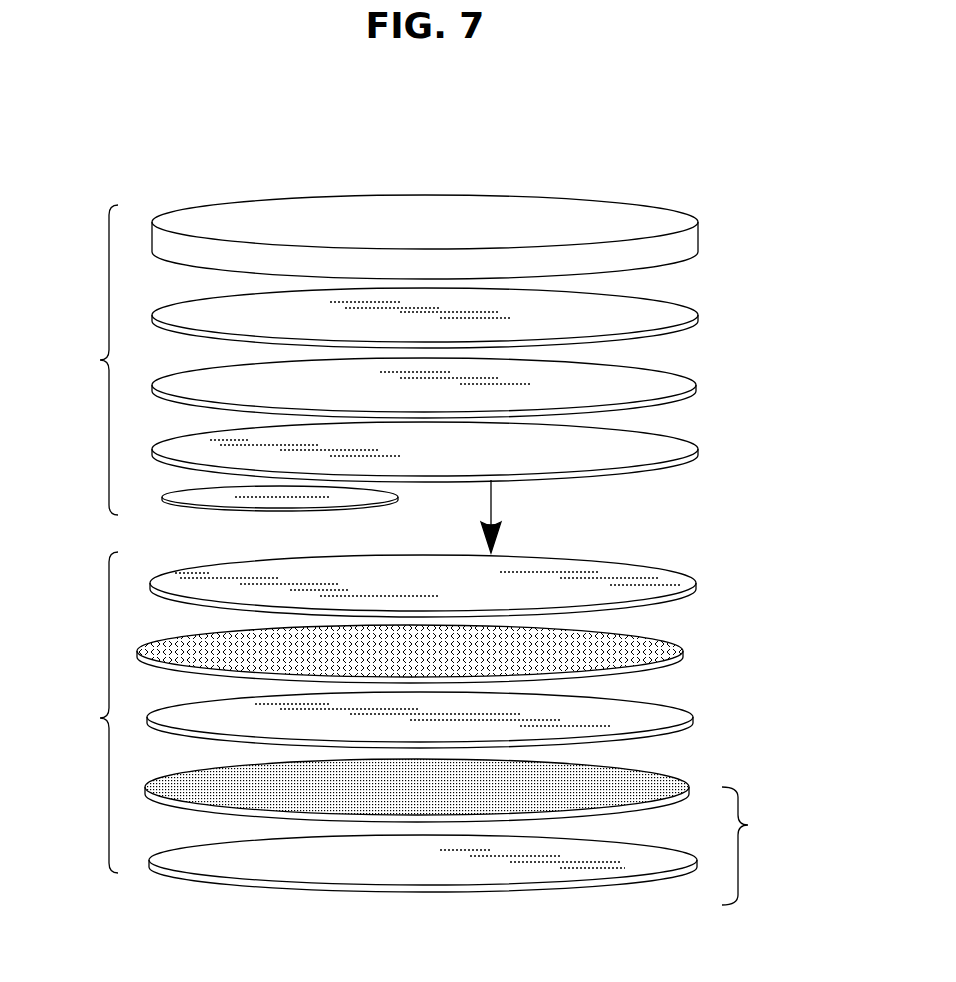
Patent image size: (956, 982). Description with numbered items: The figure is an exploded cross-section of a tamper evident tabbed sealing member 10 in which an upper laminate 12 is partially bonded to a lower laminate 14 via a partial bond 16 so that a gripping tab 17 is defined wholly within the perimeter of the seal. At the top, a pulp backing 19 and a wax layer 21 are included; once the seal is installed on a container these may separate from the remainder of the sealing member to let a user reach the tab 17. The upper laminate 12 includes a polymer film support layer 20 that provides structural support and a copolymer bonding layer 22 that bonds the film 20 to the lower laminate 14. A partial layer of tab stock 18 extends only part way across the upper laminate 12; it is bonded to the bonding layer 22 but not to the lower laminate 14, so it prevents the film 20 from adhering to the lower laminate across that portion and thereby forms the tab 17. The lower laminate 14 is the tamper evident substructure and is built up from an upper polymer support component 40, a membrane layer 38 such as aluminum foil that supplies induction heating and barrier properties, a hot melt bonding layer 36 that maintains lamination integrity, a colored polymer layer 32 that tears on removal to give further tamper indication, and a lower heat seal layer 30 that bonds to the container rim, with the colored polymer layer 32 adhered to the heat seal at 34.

The tamper evident tabbed sealing member 10 is at (730, 140).
The upper laminate 12 is at (89, 360).
The lower laminate 14 is at (84, 712).
The partial bond 16 is at (493, 492).
The gripping tab 17 is at (175, 157).
The tab stock 18 is at (240, 487).
The pulp backing 19 is at (690, 245).
The polymer film support layer 20 is at (648, 382).
The wax layer 21 is at (648, 318).
The bonding layer 22 is at (648, 446).
The heat seal layer 30 is at (509, 877).
The colored polymer layer 32 is at (648, 782).
The adhered region of colored polymer layer and heat seal 34 is at (756, 846).
The bonding layer 36 is at (693, 718).
The membrane layer 38 is at (683, 652).
The upper polymer support component 40 is at (608, 572).